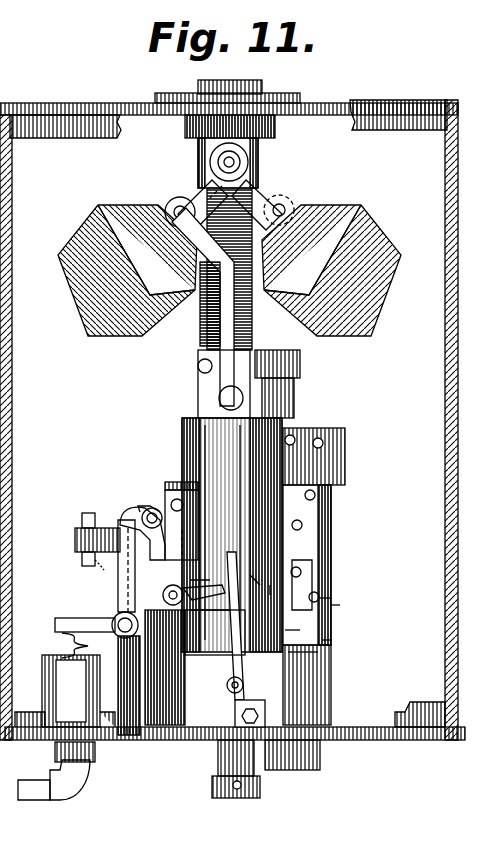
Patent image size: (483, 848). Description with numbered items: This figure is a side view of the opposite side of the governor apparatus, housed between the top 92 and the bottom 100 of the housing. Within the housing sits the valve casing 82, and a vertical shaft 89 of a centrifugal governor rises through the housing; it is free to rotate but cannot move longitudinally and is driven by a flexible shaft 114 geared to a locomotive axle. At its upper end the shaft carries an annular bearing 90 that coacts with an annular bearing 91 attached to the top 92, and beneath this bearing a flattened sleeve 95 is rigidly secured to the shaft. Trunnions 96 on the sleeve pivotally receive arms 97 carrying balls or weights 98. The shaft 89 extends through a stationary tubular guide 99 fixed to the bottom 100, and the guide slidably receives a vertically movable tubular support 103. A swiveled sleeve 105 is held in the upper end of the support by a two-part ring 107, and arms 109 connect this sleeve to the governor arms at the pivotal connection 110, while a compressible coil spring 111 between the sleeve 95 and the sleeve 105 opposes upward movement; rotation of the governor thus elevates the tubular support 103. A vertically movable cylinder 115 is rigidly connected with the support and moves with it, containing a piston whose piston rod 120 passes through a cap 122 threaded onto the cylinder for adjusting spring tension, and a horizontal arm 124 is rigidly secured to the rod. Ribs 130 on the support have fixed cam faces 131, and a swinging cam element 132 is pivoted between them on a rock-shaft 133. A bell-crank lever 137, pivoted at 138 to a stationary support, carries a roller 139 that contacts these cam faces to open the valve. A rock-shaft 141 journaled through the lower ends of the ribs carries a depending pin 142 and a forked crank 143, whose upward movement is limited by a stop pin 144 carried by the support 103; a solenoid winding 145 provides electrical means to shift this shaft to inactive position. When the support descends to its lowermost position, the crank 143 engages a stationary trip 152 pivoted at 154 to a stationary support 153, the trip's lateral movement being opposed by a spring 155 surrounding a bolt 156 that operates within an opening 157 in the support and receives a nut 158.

The valve casing 82 is at (71, 680).
The vertical shaft 89 is at (252, 340).
The annular bearing 90 is at (262, 82).
The coacting annular bearing 91 is at (276, 132).
The top of the housing 92 is at (86, 103).
The sleeve 95 is at (258, 152).
The trunnions 96 is at (246, 163).
The arms of centrifugal governor 97 is at (205, 185).
The balls or weights 98 is at (229, 270).
The stationary tubular guide 99 is at (244, 685).
The bottom of the housing 100 is at (376, 740).
The tubular support 103 is at (222, 532).
The swiveled tubular connection or sleeve 105 is at (208, 392).
The two-part ring 107 is at (183, 424).
The arms 109 is at (220, 342).
The pivotal connection 110 is at (165, 205).
The compressible coil spring 111 is at (210, 323).
The flexible shaft 114 is at (212, 786).
The vertically movable cylinder 115 is at (334, 641).
The piston rod 120 is at (298, 400).
The cap 122 is at (345, 465).
The horizontal arm 124 is at (300, 366).
The ribs 130 is at (190, 520).
The fixed cam faces 131 is at (195, 546).
The swinging cam element 132 is at (140, 521).
The rock-shaft 133 is at (167, 488).
The bell-crank lever 137 is at (118, 600).
The pivot of bell-crank lever 138 is at (138, 740).
The roller 139 is at (146, 508).
The rock-shaft 141 is at (196, 586).
The depending crank or pin 142 is at (112, 625).
The forked crank 143 is at (300, 562).
The stop pin 144 is at (222, 626).
The solenoid winding 145 is at (205, 668).
The stationary trip 152 is at (302, 630).
The stationary support 153 is at (320, 655).
The pivot of trip 154 is at (333, 690).
The spring 155 is at (262, 580).
The bolt 156 is at (280, 590).
The opening 157 is at (342, 606).
The nut 158 is at (379, 591).